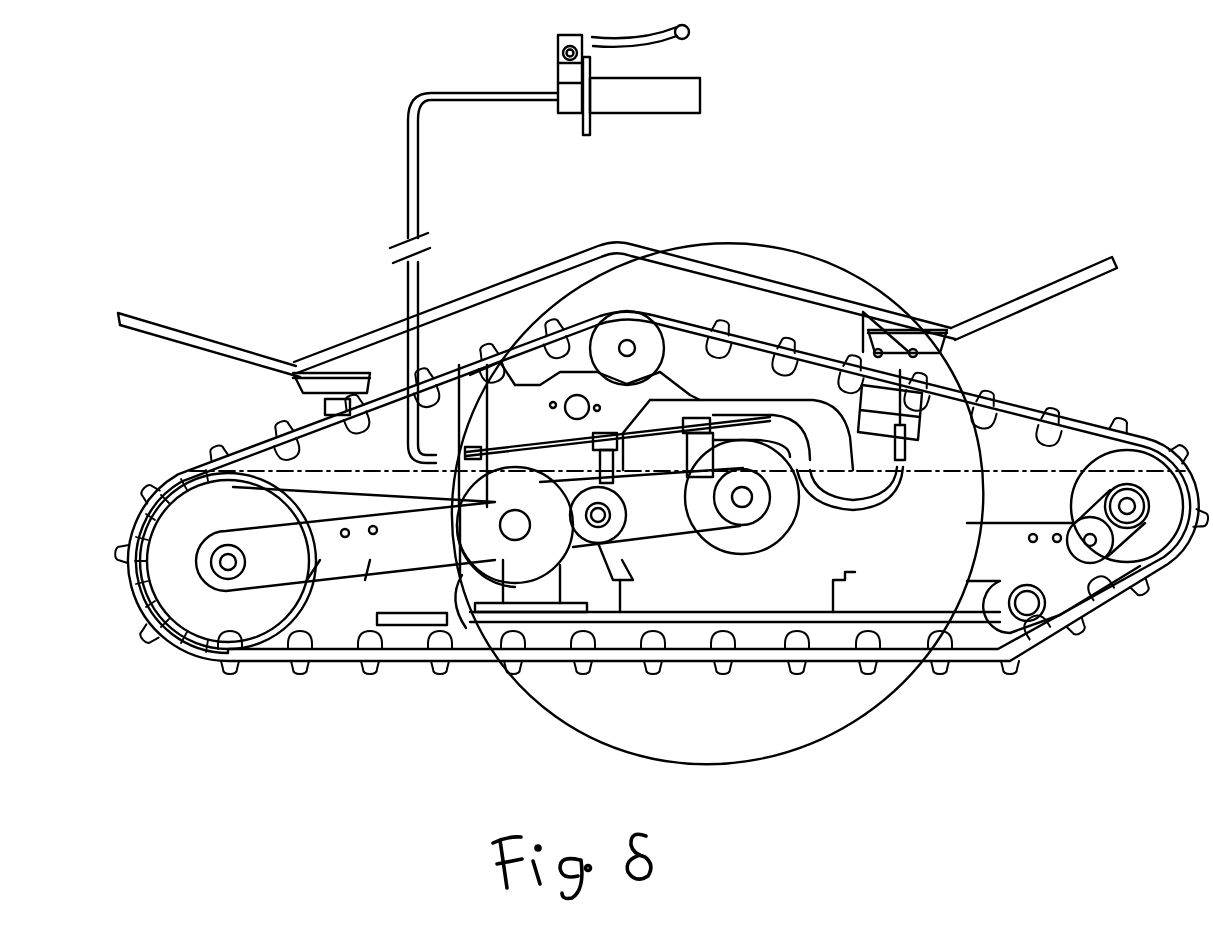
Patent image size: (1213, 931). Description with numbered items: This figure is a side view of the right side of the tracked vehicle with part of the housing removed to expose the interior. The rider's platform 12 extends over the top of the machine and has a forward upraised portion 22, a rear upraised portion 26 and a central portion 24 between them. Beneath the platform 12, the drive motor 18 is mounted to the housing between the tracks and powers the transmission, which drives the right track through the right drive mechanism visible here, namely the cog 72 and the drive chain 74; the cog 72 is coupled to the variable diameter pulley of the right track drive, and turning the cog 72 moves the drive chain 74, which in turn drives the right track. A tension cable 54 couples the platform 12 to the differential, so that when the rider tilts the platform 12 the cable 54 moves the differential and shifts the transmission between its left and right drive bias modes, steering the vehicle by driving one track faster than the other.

The platform 12 is at (537, 272).
The drive motor 18 is at (748, 575).
The forward upraised portion 22 is at (1045, 282).
The central portion 24 is at (637, 243).
The rear upraised portion 26 is at (195, 333).
The tension cable 54 is at (927, 620).
The cog 72 is at (193, 603).
The drive chain 74 is at (338, 607).